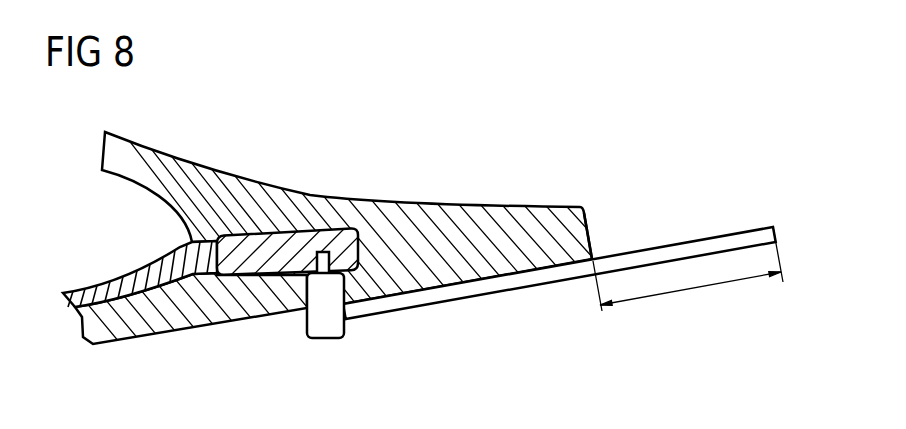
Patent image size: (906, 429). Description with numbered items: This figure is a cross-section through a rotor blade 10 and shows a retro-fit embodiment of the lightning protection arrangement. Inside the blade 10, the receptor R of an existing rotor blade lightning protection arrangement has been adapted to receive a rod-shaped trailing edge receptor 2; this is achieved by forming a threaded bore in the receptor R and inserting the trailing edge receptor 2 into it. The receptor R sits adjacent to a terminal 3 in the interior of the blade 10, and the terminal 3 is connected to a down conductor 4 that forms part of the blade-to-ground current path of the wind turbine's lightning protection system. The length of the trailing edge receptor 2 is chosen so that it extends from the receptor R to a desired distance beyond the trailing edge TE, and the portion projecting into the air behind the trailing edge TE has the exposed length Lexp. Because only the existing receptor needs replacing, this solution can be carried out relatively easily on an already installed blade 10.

The rotor blade 10 is at (150, 154).
The terminal 3 is at (307, 242).
The down conductor 4 is at (80, 312).
The trailing edge receptor 2 is at (503, 287).
The receptor R is at (327, 333).
The trailing edge TE is at (594, 232).
The exposed length Lexp is at (689, 288).